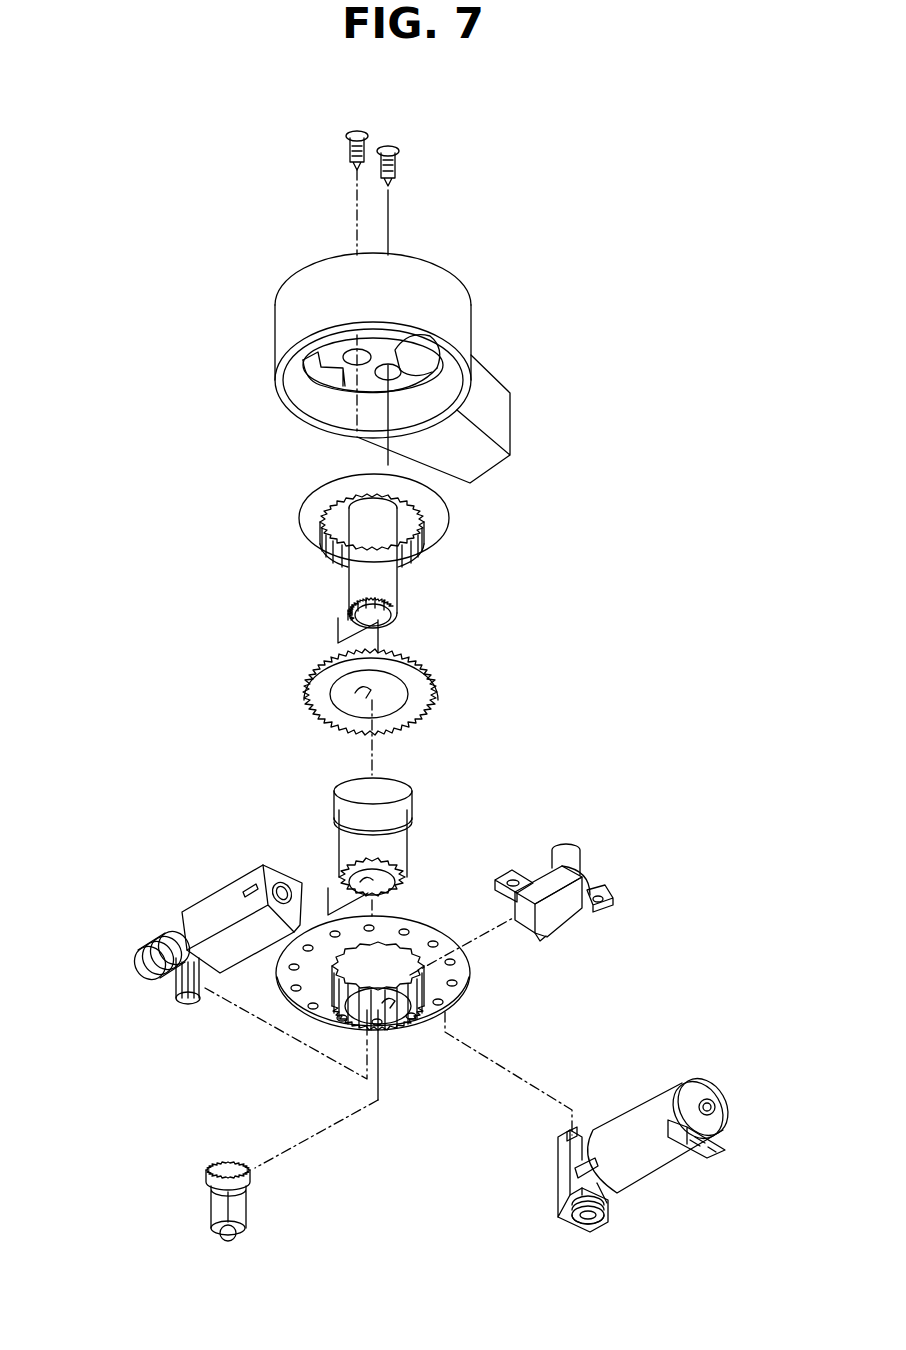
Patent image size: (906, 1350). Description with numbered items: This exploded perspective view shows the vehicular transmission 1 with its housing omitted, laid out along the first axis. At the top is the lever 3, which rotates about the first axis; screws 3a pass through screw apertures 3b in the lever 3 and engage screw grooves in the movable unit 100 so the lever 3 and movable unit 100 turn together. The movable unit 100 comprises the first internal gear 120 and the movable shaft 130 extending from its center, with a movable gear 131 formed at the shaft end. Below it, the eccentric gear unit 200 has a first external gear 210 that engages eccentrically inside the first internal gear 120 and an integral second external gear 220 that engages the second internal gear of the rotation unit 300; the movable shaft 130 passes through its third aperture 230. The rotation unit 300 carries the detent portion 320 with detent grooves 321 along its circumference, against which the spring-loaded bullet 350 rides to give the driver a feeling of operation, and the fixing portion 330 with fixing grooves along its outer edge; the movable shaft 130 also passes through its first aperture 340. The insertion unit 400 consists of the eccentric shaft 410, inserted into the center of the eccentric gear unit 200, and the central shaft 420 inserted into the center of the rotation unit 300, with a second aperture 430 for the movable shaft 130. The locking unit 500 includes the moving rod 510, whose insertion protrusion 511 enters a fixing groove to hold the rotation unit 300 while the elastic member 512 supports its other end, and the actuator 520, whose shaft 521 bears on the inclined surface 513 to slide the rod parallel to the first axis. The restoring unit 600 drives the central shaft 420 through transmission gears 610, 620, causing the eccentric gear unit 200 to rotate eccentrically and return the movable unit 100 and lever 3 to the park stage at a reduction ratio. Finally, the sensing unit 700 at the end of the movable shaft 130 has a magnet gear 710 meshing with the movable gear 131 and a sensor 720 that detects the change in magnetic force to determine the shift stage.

The vehicular transmission 1 is at (694, 191).
The lever 3 is at (430, 276).
The screws 3a is at (389, 147).
The screw apertures 3b is at (398, 342).
The movable unit 100 is at (470, 540).
The first internal gear 120 is at (342, 548).
The movable shaft 130 is at (385, 522).
The movable gear 131 is at (349, 605).
The eccentric gear unit 200 is at (465, 668).
The first external gear 210 is at (385, 652).
The second external gear 220 is at (433, 700).
The third aperture 230 is at (345, 703).
The rotation unit 300 is at (497, 975).
The detent portion 320 is at (454, 1004).
The detent grooves 321 is at (438, 1010).
The fixing portion 330 is at (422, 941).
The first aperture 340 is at (389, 1002).
The bullet 350 is at (515, 918).
The insertion unit 400 is at (440, 827).
The eccentric shaft 410 is at (338, 793).
The central shaft 420 is at (345, 846).
The second aperture 430 is at (371, 888).
The locking unit 500 is at (690, 1228).
The moving rod 510 is at (560, 1165).
The insertion protrusion 511 is at (567, 1136).
The elastic member 512 is at (600, 1216).
The inclined surface 513 is at (565, 1212).
The actuator 520 is at (640, 1115).
The shaft 521 is at (580, 1170).
The restoring unit 600 is at (220, 897).
The transmission gear 610 is at (140, 966).
The transmission gear 620 is at (183, 995).
The sensing unit 700 is at (122, 1178).
The magnet gear 710 is at (212, 1199).
The sensor 720 is at (215, 1236).